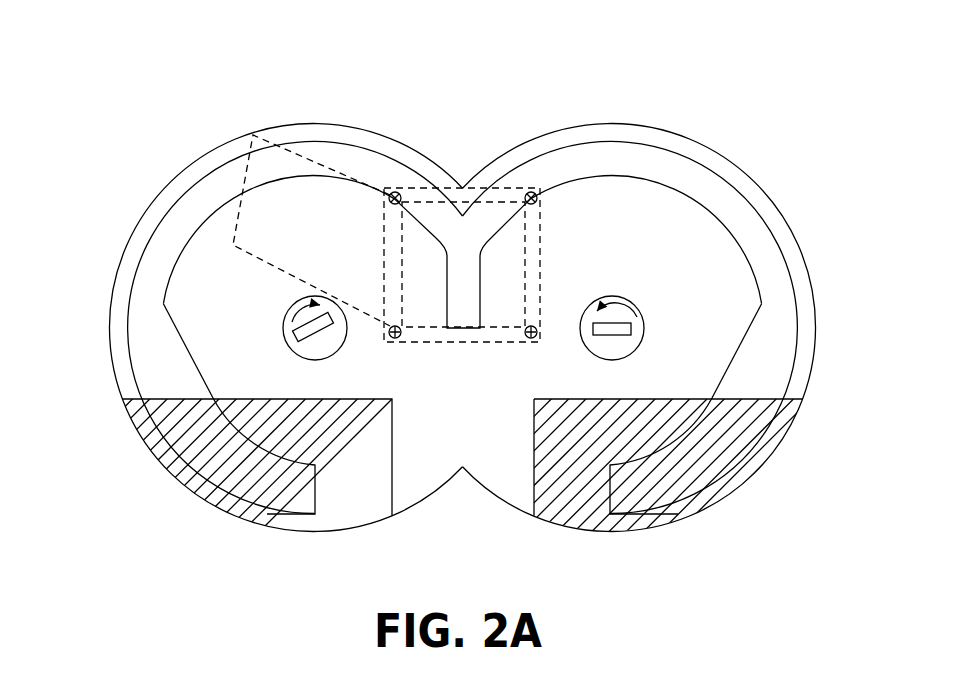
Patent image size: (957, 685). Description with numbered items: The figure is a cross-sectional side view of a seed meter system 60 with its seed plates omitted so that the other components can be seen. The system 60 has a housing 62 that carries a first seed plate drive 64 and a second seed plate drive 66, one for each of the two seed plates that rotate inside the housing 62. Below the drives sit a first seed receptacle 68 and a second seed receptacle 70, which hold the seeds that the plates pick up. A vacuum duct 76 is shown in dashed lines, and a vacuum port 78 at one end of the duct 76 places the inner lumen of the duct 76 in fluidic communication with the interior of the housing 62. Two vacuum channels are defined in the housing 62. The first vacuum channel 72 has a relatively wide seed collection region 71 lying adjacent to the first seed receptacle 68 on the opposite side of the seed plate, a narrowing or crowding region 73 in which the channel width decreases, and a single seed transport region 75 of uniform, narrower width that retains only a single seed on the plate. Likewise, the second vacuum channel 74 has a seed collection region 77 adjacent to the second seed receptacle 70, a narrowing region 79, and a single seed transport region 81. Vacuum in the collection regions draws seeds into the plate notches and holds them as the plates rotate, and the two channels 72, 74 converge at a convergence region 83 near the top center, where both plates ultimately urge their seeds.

The seed meter system 60 is at (152, 90).
The housing 62 is at (168, 185).
The first seed plate drive 64 is at (280, 333).
The second seed plate drive 66 is at (648, 334).
The first seed receptacle 68 is at (366, 496).
The second seed receptacle 70 is at (556, 496).
The seed collection region 71 is at (188, 446).
The first vacuum channel 72 is at (143, 308).
The narrowing region 73 is at (147, 355).
The second vacuum channel 74 is at (777, 301).
The single seed transport region 75 is at (160, 253).
The vacuum duct 76 is at (315, 157).
The seed collection region 77 is at (717, 453).
The vacuum port 78 is at (506, 188).
The narrowing region 79 is at (778, 357).
The single seed transport region 81 is at (722, 207).
The convergence region 83 is at (468, 285).